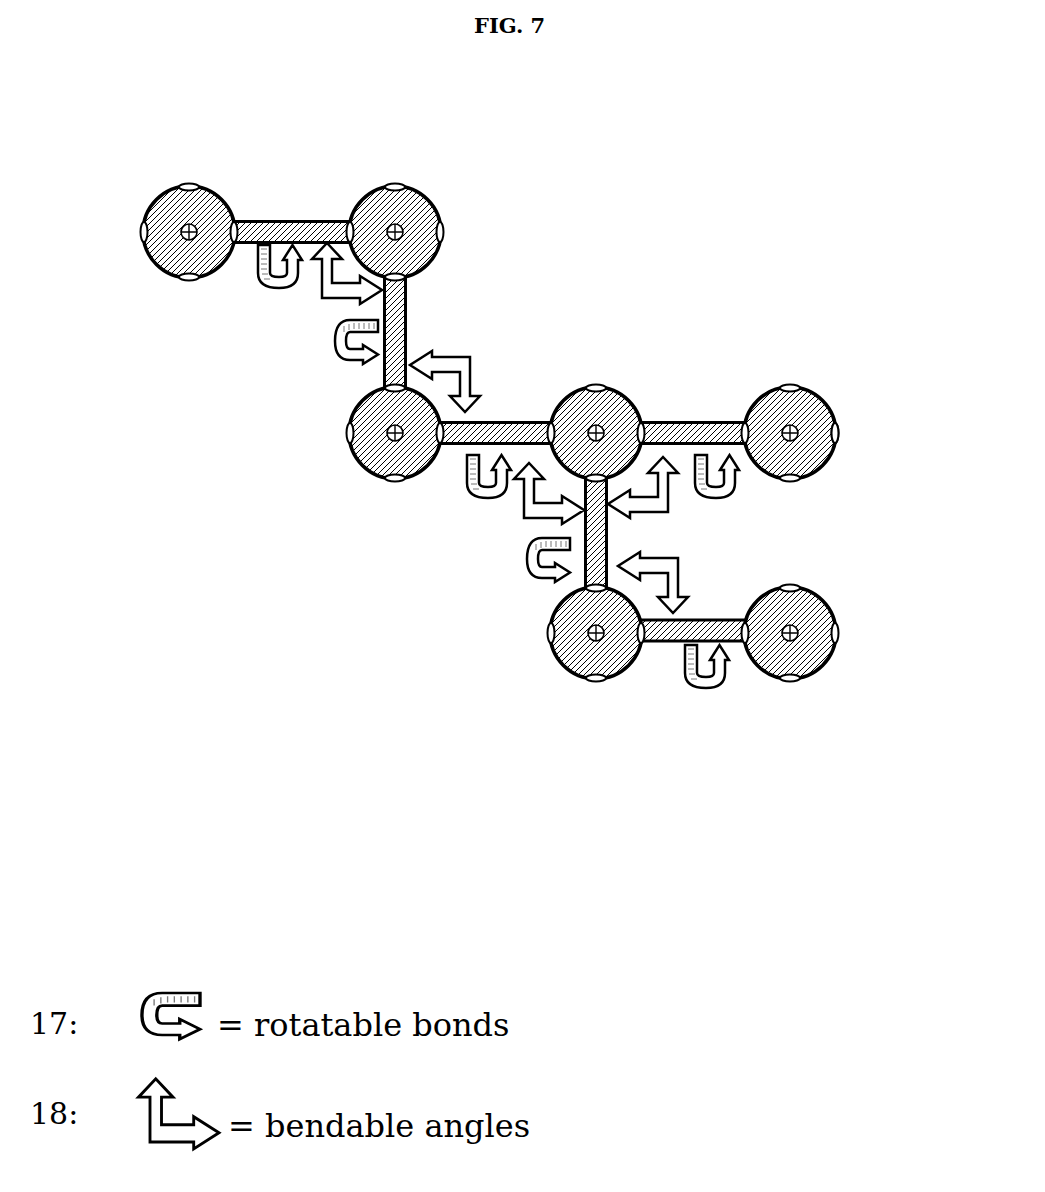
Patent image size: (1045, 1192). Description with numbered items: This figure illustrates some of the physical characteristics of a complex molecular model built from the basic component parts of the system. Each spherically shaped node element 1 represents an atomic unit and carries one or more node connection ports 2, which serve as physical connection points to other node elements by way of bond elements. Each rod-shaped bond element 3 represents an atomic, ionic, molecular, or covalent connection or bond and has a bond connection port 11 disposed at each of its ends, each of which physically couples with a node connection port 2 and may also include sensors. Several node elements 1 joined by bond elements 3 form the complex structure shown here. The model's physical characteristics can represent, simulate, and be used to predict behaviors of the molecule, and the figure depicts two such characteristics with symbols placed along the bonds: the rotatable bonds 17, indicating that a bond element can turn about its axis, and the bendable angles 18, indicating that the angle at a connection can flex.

The node element 1 is at (825, 392).
The node connection port 2 is at (840, 434).
The bond element 3 is at (705, 420).
The bond connection port 11 is at (646, 645).
The rotatable bond 17 is at (718, 690).
The bendable angle 18 is at (677, 567).